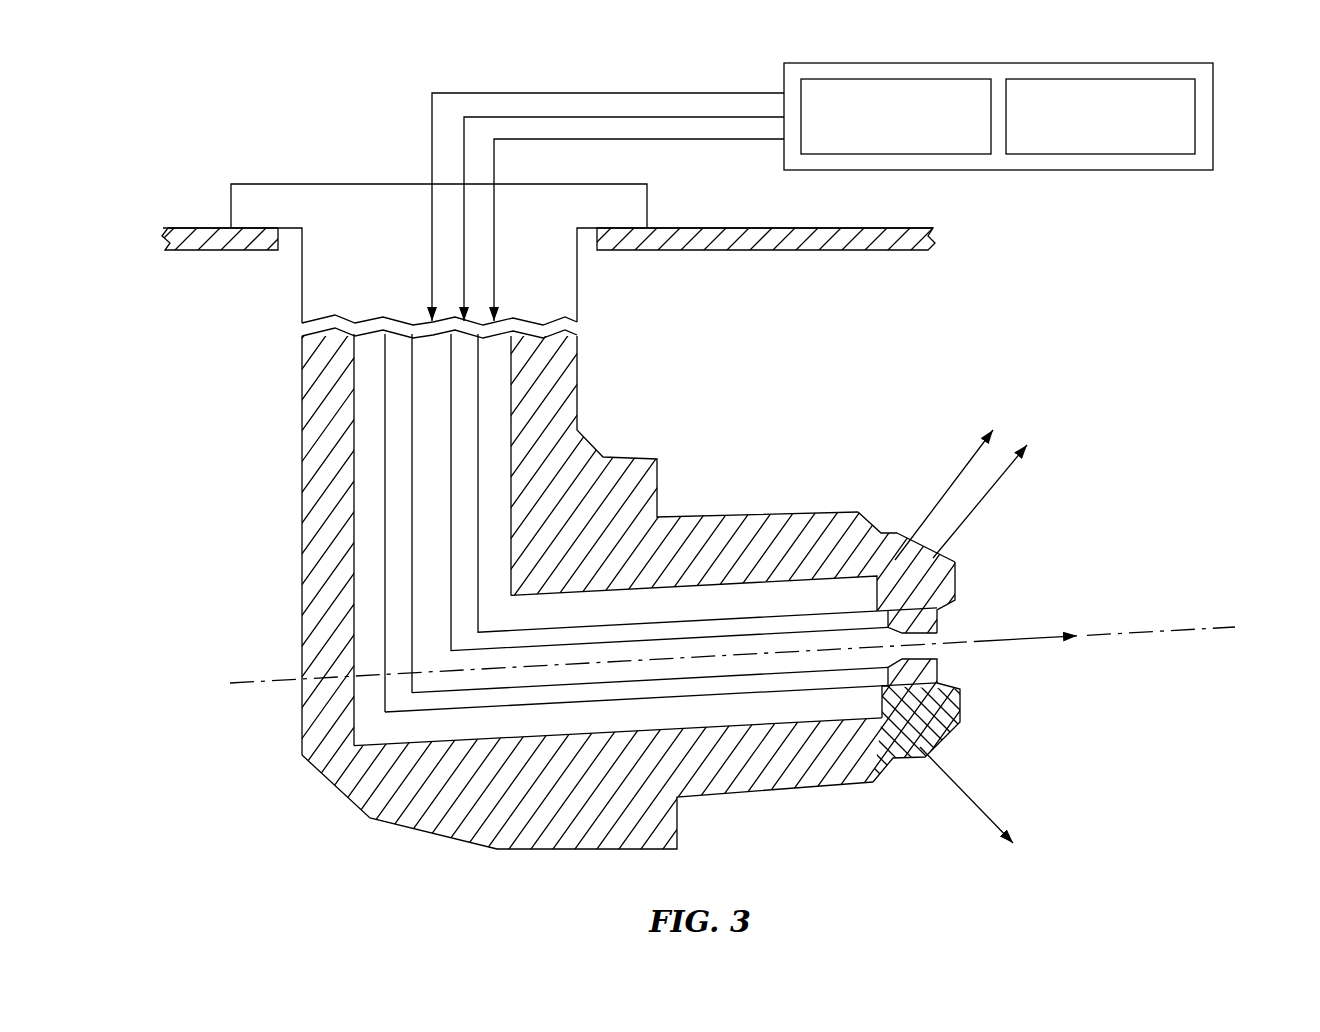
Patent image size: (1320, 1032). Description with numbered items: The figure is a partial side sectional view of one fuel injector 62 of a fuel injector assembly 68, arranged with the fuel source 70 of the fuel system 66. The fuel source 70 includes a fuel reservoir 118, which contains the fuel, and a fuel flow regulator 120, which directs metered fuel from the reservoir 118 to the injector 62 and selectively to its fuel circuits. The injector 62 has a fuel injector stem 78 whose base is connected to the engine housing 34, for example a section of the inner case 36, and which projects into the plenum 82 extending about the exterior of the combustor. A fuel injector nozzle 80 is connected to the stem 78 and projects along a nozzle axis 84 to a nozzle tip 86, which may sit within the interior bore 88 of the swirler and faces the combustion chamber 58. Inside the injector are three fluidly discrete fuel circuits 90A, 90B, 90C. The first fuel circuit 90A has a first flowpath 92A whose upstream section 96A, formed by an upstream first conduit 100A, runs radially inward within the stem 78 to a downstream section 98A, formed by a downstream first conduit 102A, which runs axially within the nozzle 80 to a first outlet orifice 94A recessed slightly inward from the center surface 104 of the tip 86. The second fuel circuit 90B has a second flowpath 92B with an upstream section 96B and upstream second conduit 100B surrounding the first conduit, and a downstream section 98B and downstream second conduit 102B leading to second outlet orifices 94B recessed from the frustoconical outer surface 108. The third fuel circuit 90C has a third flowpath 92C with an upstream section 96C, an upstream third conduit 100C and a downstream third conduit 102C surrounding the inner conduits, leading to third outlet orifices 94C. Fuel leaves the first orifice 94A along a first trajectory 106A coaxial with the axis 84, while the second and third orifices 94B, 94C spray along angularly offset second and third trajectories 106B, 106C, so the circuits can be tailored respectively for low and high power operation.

The engine housing 34 is at (614, 244).
The inner case 36 is at (953, 238).
The combustion chamber 58 is at (1197, 501).
The fuel injector 62 is at (287, 447).
The fuel system 66 is at (1226, 67).
The fuel injector assembly 68 is at (288, 795).
The fuel source 70 is at (1215, 127).
The fuel injector stem 78 is at (302, 378).
The fuel injector nozzle 80 is at (635, 849).
The plenum 82 is at (246, 309).
The nozzle axis 84 is at (1212, 632).
The nozzle tip 86 is at (960, 582).
The interior bore 88 is at (894, 452).
The first fuel circuit 90A is at (545, 643).
The second fuel circuit 90B is at (622, 622).
The third fuel circuit 90C is at (698, 587).
The first flowpath 92A is at (492, 677).
The second flowpath 92B is at (556, 692).
The third flowpath 92C is at (628, 792).
The first outlet orifice 94A is at (940, 645).
The second outlet orifice 94B is at (948, 551).
The third outlet orifice 94C is at (905, 533).
The upstream section of first flowpath 96A is at (289, 513).
The upstream section of second flowpath 96B is at (281, 523).
The upstream section of third flowpath 96C is at (268, 540).
The downstream section of first flowpath 98A is at (650, 721).
The downstream section of second flowpath 98B is at (661, 760).
The upstream first conduit 100A is at (412, 472).
The upstream second conduit 100B is at (385, 516).
The upstream third conduit 100C is at (354, 566).
The downstream first conduit 102A is at (718, 677).
The downstream second conduit 102B is at (768, 692).
The downstream third conduit 102C is at (818, 722).
The center surface 104 is at (963, 712).
The first trajectory 106A is at (1043, 637).
The second trajectory 106B is at (985, 500).
The third trajectory 106C is at (962, 465).
The outer surface 108 is at (935, 552).
The fuel reservoir 118 is at (878, 155).
The fuel flow regulator 120 is at (1125, 155).